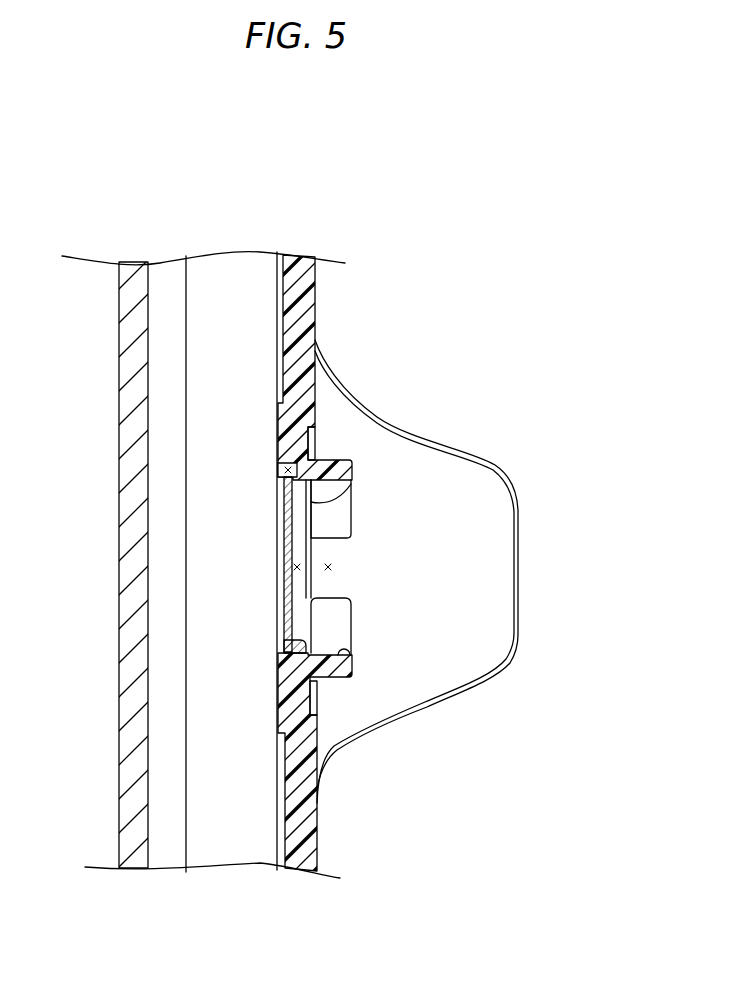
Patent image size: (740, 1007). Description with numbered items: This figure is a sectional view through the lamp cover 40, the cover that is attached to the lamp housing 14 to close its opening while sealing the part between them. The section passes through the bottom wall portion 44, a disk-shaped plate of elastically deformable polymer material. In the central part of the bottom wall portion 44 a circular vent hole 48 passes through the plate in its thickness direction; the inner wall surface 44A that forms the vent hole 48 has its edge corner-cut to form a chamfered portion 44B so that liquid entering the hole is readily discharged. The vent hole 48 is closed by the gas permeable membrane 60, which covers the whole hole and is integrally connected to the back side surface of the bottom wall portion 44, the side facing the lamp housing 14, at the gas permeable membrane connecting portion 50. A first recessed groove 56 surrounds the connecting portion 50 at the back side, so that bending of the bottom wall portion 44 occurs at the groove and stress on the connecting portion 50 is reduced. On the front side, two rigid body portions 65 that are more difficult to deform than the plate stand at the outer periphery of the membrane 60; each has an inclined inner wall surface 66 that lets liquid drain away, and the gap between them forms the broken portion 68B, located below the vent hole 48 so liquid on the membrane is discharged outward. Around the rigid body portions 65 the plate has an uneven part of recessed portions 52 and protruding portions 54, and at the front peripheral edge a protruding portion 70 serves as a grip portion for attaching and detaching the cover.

The lamp housing 14 is at (112, 318).
The lamp cover 40 is at (481, 273).
The bottom wall portion 44 is at (370, 527).
The inner wall surface 44A is at (285, 514).
The chamfered portion 44B is at (350, 499).
The vent hole 48 is at (173, 566).
The gas permeable membrane connecting portion 50 is at (283, 648).
The recessed portions 52 is at (313, 440).
The protruding portions 54 is at (300, 330).
The first recessed groove 56 is at (279, 470).
The gas permeable membrane 60 is at (283, 566).
The rigid body portions 65 is at (355, 518).
The inner wall surface 66 is at (348, 647).
The broken portion 68B is at (331, 566).
The protruding portions 70 is at (488, 456).